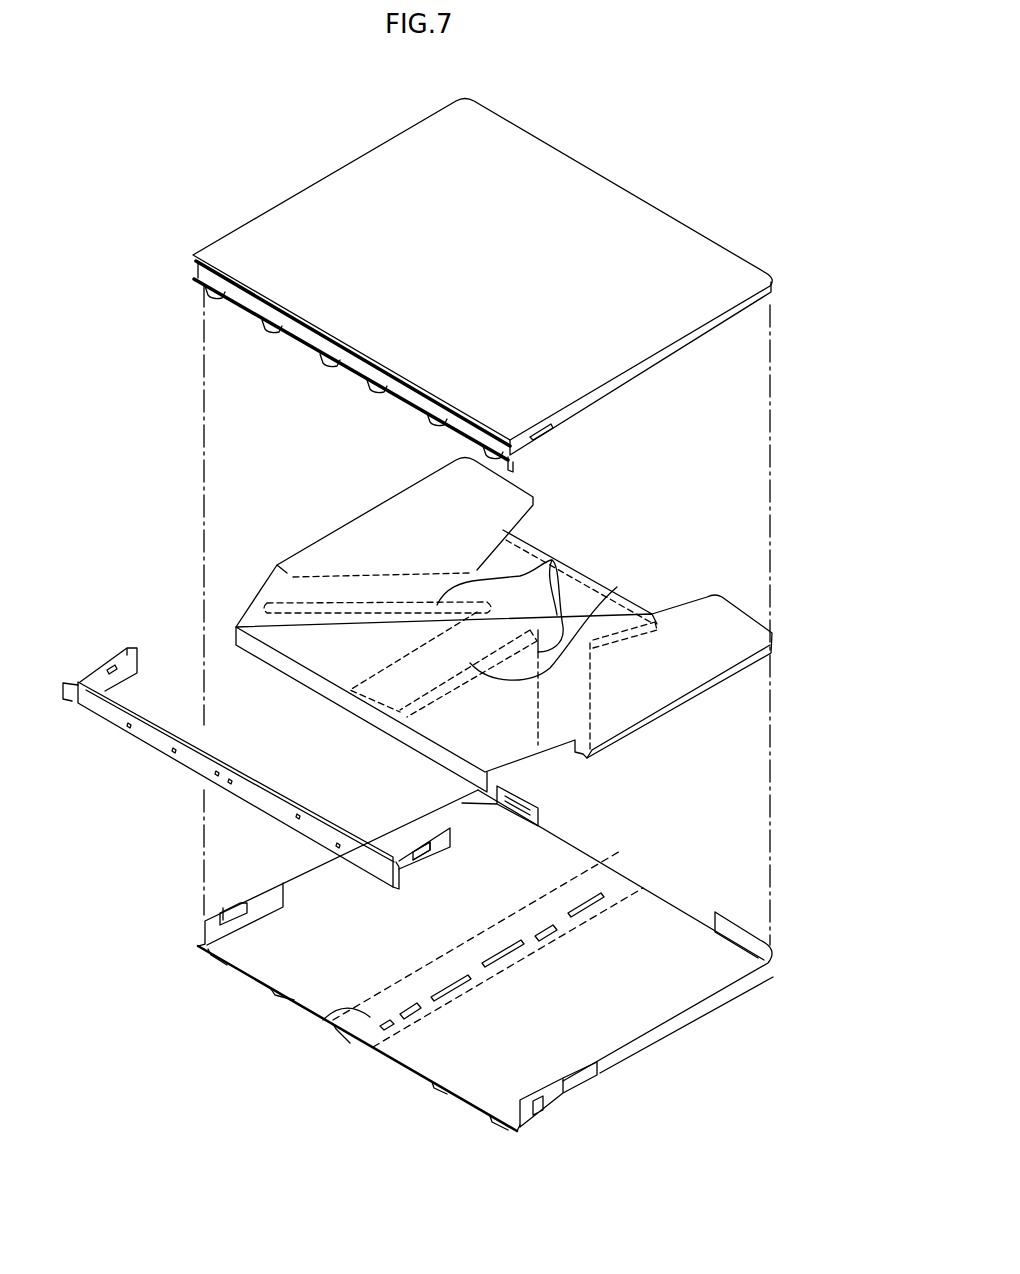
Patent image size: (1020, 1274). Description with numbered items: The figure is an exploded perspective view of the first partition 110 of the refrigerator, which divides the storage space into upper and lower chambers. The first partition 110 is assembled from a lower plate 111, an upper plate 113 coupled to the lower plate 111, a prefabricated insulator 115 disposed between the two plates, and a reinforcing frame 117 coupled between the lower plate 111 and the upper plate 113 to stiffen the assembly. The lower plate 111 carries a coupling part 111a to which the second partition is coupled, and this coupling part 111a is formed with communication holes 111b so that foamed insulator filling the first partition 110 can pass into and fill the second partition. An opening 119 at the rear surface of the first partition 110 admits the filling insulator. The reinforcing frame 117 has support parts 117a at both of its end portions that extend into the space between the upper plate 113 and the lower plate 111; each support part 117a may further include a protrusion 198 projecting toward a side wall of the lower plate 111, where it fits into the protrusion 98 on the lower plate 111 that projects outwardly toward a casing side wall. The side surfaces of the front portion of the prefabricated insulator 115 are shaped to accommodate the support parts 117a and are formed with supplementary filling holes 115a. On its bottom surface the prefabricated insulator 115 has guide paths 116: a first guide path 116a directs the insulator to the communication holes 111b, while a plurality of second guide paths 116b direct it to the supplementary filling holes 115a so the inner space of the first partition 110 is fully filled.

The first partition 110 is at (319, 89).
The upper plate 113 is at (627, 207).
The prefabricated insulator 115 is at (717, 623).
The supplementary filling holes 115a is at (560, 758).
The guide paths 116 is at (468, 613).
The first guide path 116a is at (632, 594).
The second guide paths 116b is at (560, 554).
The reinforcing frame 117 is at (115, 718).
The support parts 117a is at (127, 648).
The protrusion 198 is at (433, 866).
The lower plate 111 is at (453, 960).
The coupling part 111a is at (323, 1020).
The communication holes 111b is at (567, 900).
The opening 119 is at (650, 878).
The protrusion 98 is at (220, 913).